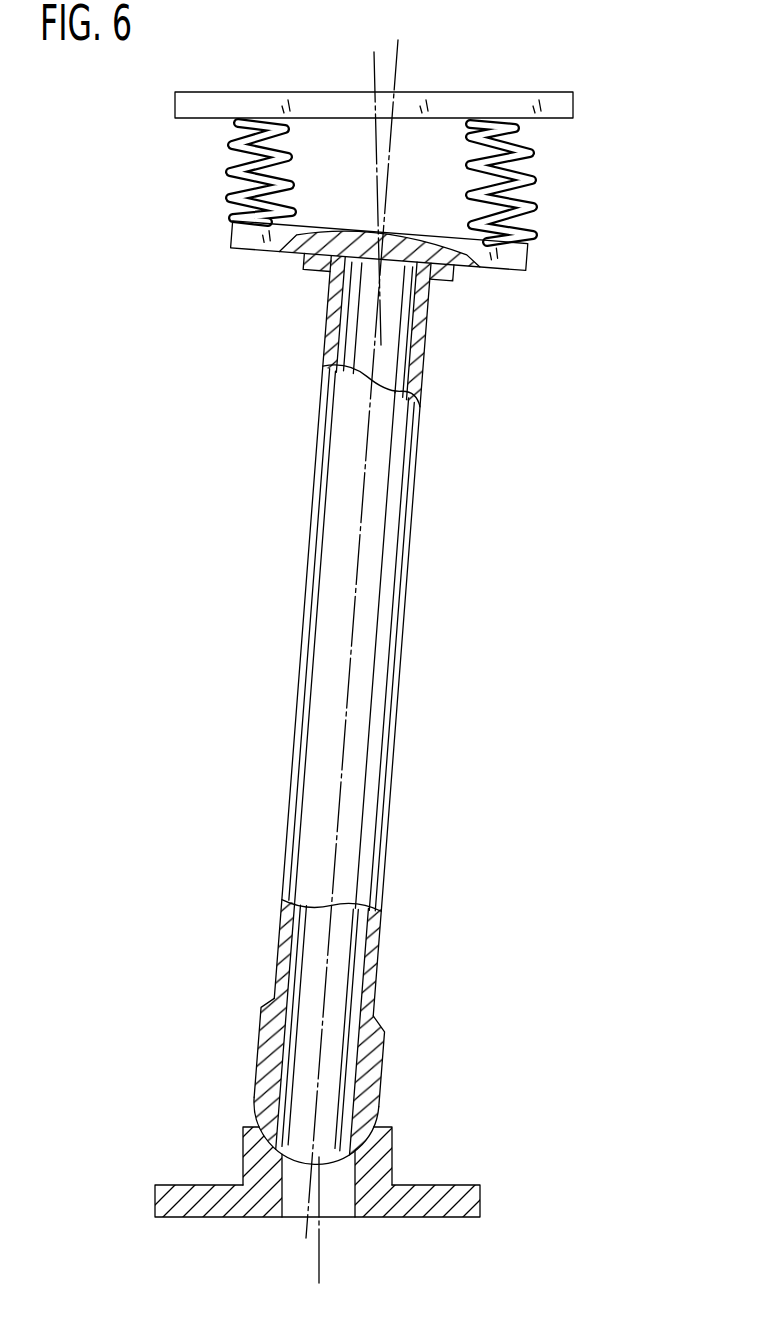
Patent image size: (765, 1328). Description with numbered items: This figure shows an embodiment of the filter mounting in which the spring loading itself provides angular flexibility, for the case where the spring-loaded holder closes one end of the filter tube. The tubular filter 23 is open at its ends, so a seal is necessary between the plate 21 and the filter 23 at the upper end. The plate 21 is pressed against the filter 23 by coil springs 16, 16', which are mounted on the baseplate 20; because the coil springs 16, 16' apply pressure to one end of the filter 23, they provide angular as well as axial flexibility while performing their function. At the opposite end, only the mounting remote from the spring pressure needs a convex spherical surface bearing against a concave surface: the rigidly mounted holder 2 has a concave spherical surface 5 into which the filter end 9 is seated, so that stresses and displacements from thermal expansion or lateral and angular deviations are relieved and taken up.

The holder 2 is at (480, 1208).
The concave spherical surface 5 is at (243, 1155).
The filter end 9 is at (258, 1110).
The spring 16 is at (232, 172).
The spring 16' is at (528, 183).
The baseplate 20 is at (573, 98).
The plate 21 is at (530, 256).
The filter 23 is at (395, 503).